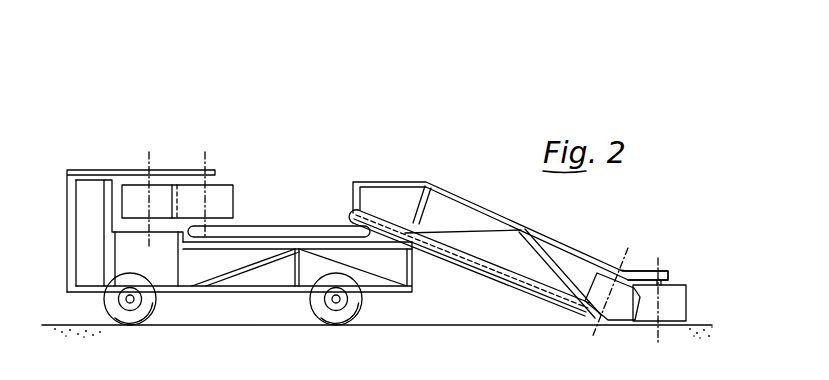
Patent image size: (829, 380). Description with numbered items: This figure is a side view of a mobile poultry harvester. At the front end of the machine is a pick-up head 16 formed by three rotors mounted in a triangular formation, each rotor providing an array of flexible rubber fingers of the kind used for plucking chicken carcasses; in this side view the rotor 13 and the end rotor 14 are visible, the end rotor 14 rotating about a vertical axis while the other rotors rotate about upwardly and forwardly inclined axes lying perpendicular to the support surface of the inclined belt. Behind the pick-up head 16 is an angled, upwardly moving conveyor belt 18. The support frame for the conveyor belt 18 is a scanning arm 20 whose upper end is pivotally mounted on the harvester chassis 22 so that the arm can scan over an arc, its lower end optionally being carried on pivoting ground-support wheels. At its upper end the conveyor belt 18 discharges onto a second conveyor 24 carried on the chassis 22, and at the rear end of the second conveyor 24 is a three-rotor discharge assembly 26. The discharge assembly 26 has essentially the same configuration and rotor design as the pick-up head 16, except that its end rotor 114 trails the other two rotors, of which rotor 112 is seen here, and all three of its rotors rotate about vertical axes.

The rotor 13 is at (620, 323).
The end rotor 14 is at (678, 285).
The pick-up head 16 is at (622, 245).
The conveyor belt 18 is at (508, 246).
The scanning arm 20 is at (456, 194).
The harvester chassis 22 is at (225, 294).
The second conveyor 24 is at (279, 225).
The discharge assembly 26 is at (165, 148).
The rotor 112 is at (231, 187).
The end rotor 114 is at (130, 193).